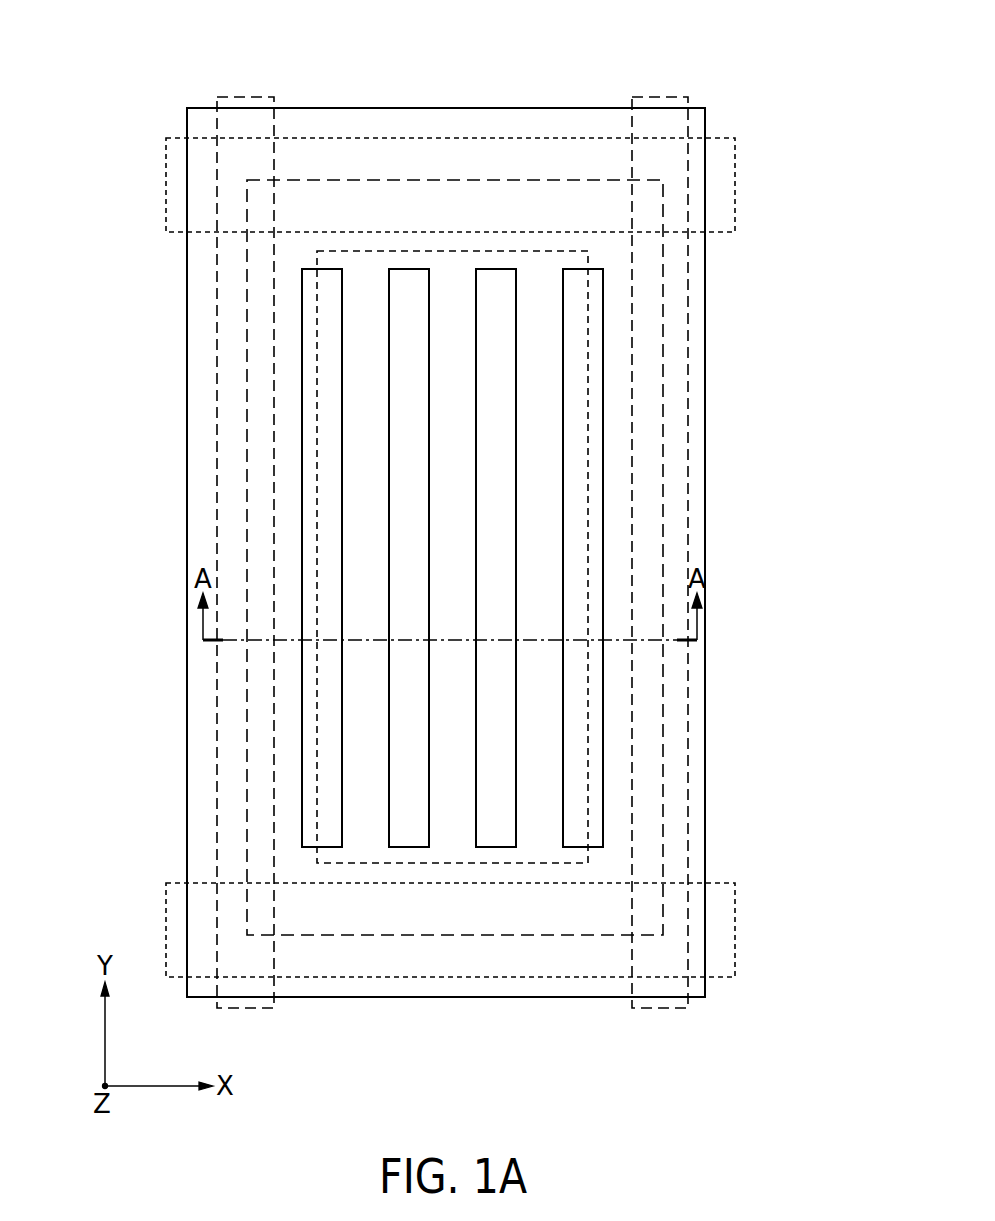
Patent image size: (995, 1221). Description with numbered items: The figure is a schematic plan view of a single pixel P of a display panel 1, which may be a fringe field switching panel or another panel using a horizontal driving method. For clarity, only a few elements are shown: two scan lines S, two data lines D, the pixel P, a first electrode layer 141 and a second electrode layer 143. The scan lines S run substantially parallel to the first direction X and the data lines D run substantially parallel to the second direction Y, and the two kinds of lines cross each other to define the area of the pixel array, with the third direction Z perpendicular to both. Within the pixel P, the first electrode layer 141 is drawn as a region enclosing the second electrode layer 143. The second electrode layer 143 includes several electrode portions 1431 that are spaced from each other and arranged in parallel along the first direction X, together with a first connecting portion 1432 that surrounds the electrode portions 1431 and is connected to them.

The display panel 1 is at (123, 100).
The data line D is at (246, 93).
The scan line S is at (743, 187).
The pixel P is at (663, 367).
The first electrode layer 141 is at (590, 257).
The second electrode layer 143 is at (585, 558).
The electrode portions 1431 is at (542, 453).
The first connecting portion 1432 is at (702, 493).